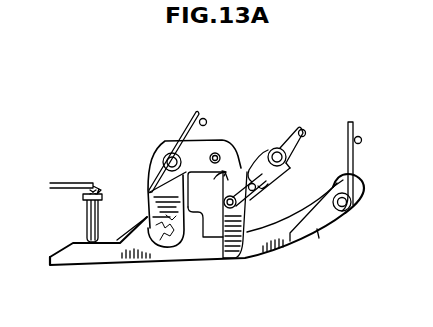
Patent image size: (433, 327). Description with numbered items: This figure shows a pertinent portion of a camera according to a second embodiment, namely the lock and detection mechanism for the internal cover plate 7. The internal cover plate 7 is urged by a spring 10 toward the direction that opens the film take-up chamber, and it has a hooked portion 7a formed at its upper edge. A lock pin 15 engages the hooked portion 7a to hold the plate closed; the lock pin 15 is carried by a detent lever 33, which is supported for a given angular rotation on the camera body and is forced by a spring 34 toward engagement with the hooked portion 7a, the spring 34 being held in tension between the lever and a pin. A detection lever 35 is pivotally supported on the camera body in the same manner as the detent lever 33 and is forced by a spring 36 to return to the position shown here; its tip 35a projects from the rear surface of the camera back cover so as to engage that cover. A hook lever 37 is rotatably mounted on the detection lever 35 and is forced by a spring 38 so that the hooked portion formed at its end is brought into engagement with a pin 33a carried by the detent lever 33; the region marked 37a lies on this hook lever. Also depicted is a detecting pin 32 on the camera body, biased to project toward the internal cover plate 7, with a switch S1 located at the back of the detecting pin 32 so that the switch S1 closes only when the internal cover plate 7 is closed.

The internal cover plate 7 is at (302, 262).
The hooked portion 7a is at (191, 226).
The spring 10 is at (354, 155).
The lock pin 15 is at (158, 258).
The detecting pin 32 is at (87, 213).
The detent lever 33 is at (158, 164).
The pin 33a is at (216, 152).
The spring 34 is at (195, 128).
The detection lever 35 is at (269, 140).
The tip of the detection lever 35a is at (248, 262).
The spring 36 is at (297, 143).
The hook lever 37 is at (254, 196).
The block 37a is at (209, 189).
The spring 38 is at (250, 205).
The switch S1 is at (63, 184).